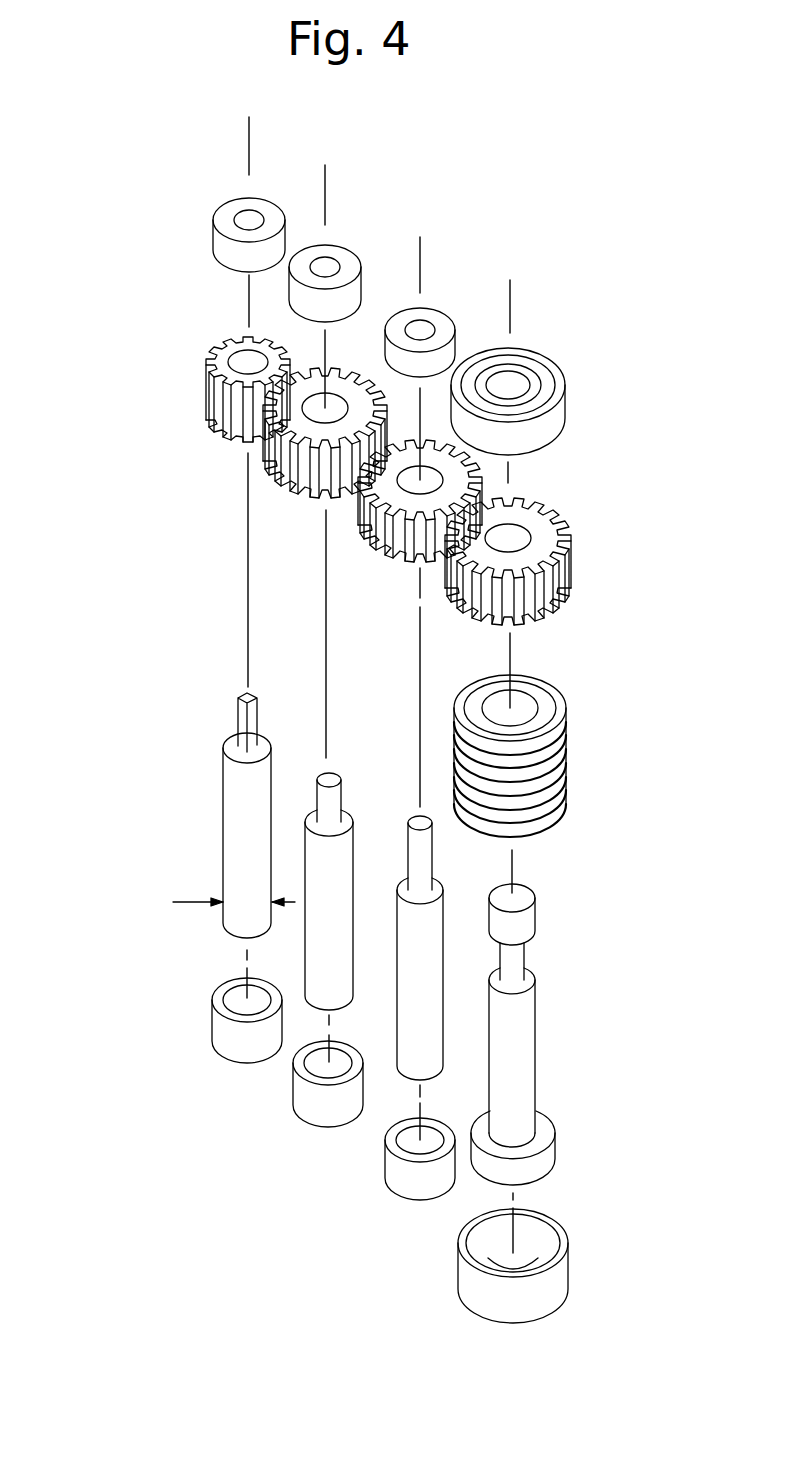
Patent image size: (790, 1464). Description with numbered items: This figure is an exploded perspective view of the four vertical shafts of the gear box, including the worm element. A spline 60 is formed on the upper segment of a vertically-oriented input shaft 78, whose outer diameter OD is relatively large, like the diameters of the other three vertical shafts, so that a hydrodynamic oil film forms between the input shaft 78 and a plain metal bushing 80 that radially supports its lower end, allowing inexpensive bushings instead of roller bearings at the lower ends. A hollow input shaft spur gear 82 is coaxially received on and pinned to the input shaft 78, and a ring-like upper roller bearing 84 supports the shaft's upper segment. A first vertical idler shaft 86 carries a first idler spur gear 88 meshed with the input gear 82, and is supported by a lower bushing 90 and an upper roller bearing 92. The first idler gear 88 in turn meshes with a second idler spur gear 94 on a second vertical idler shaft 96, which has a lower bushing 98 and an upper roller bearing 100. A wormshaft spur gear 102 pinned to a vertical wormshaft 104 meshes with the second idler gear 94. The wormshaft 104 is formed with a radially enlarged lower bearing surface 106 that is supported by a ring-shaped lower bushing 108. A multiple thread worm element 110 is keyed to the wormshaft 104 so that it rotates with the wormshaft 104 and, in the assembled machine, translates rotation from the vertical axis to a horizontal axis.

The spline 60 is at (237, 712).
The input shaft 78 is at (232, 818).
The plain metal bushing 80 is at (233, 1043).
The input shaft spur gear 82 is at (208, 392).
The upper roller bearing 84 is at (263, 203).
The first vertical idler shaft 86 is at (353, 818).
The first idler spur gear 88 is at (292, 475).
The lower bushing 90 is at (312, 1105).
The upper roller bearing 92 is at (347, 255).
The second idler spur gear 94 is at (383, 535).
The second vertical idler shaft 96 is at (397, 980).
The lower bushing 98 is at (405, 1180).
The upper roller bearing 100 is at (438, 315).
The wormshaft spur gear 102 is at (553, 512).
The wormshaft 104 is at (535, 357).
The lower bearing surface 106 is at (548, 1150).
The lower bushing 108 is at (563, 1273).
The worm element 110 is at (567, 743).
The outer diameter OD is at (192, 902).